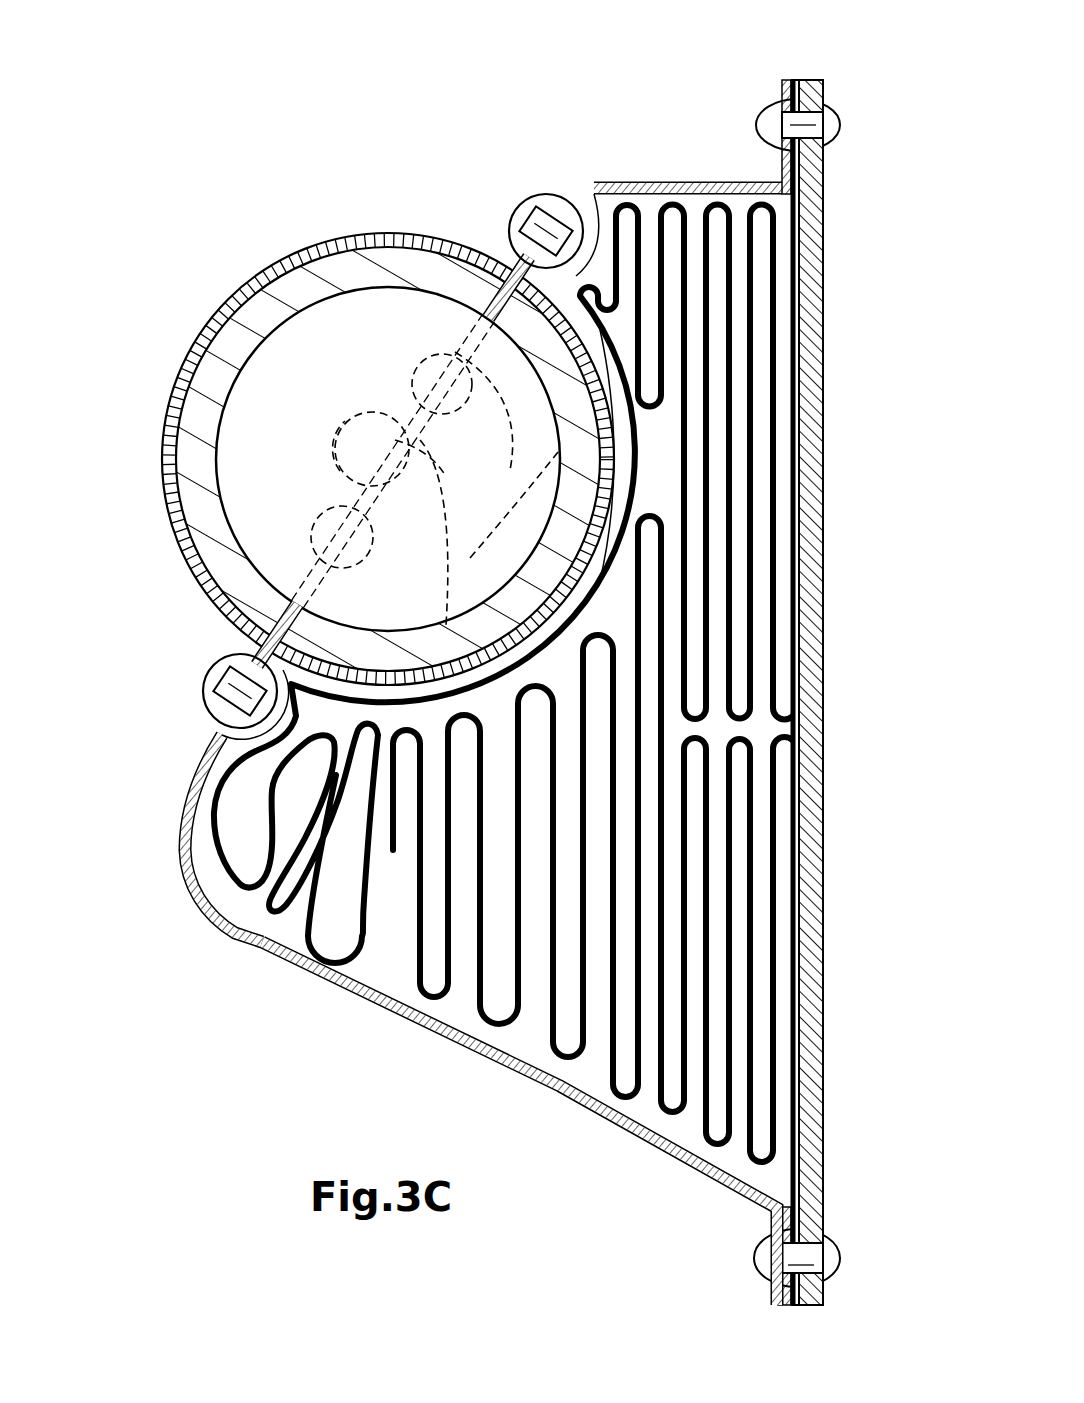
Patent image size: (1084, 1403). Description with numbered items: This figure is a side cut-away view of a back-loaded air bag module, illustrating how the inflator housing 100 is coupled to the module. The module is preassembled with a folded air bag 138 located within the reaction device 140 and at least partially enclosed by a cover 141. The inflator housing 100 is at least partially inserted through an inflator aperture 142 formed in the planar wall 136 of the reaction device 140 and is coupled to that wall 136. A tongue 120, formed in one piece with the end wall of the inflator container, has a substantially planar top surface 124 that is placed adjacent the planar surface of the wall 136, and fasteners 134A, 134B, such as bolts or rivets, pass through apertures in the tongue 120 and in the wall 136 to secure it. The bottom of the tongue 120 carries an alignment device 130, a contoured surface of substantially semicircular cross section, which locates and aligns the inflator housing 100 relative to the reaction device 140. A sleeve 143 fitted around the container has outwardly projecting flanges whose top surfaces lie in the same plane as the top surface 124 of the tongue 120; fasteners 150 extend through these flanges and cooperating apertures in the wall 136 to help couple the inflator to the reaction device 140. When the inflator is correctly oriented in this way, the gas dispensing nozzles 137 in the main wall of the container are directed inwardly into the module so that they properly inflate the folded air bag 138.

The inflator housing 100 is at (162, 451).
The tongue 120 is at (372, 412).
The top surface 124 is at (446, 468).
The alignment device 130 is at (337, 430).
The fastener 134A is at (318, 520).
The fastener 134B is at (425, 372).
The wall 136 is at (506, 380).
The gas dispensing nozzles 137 is at (449, 540).
The folded air bag 138 is at (415, 948).
The reaction device 140 is at (589, 1111).
The cover 141 is at (823, 505).
The inflator aperture 142 is at (594, 258).
The sleeve 143 is at (262, 252).
The fasteners 150 is at (518, 218).